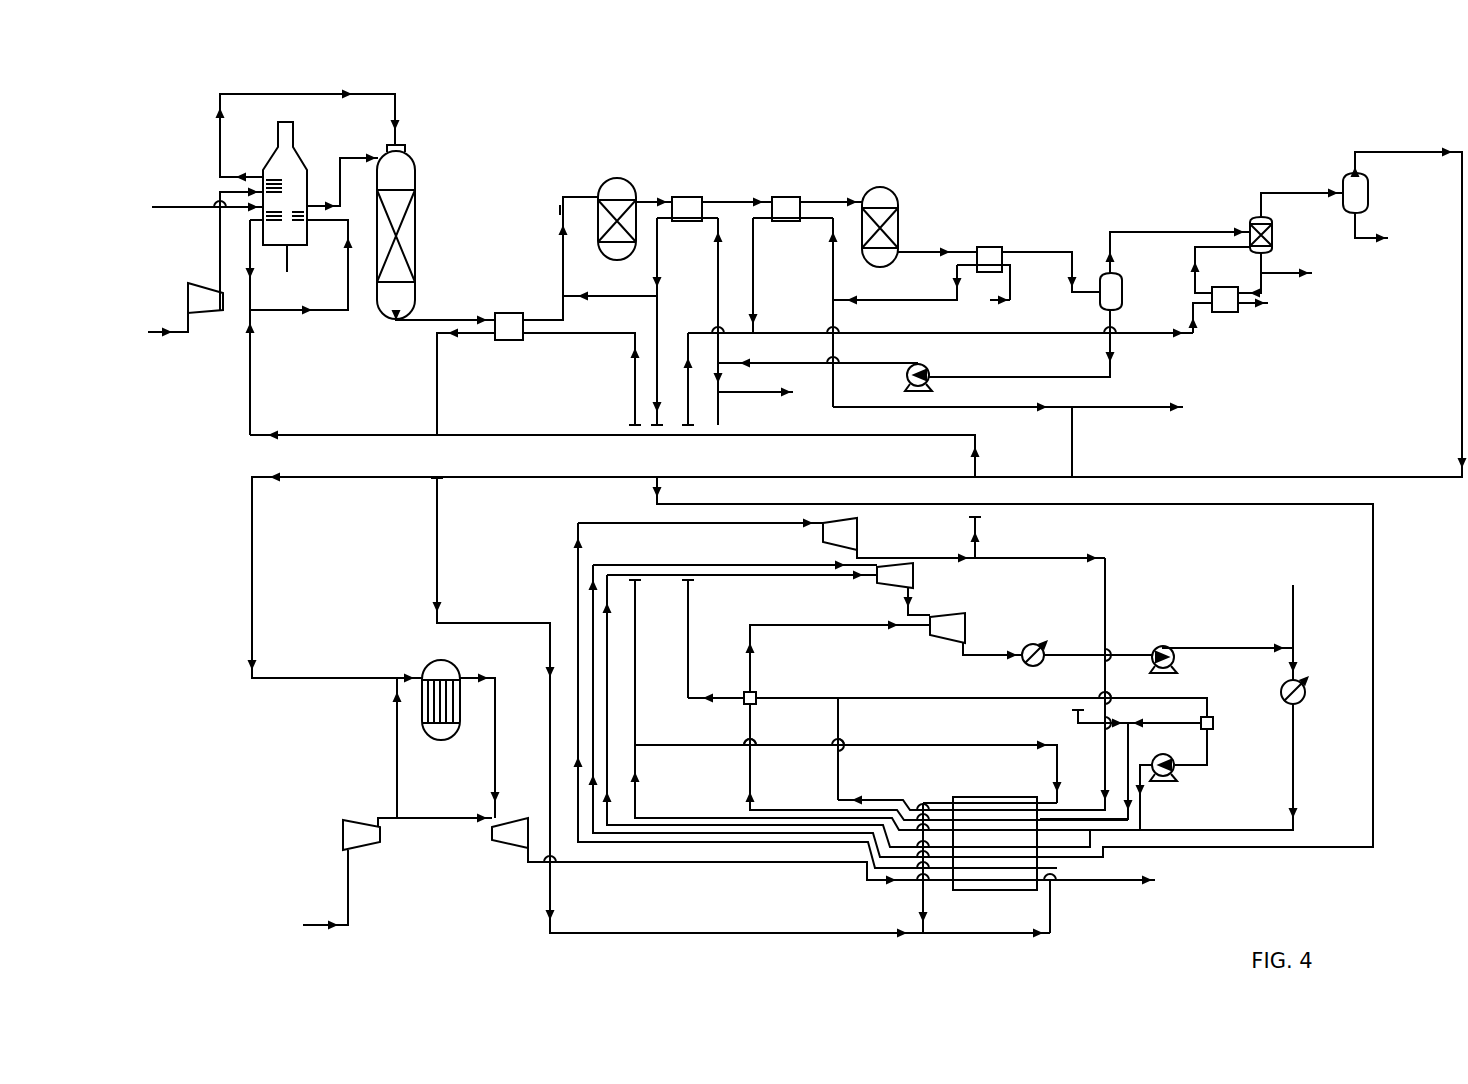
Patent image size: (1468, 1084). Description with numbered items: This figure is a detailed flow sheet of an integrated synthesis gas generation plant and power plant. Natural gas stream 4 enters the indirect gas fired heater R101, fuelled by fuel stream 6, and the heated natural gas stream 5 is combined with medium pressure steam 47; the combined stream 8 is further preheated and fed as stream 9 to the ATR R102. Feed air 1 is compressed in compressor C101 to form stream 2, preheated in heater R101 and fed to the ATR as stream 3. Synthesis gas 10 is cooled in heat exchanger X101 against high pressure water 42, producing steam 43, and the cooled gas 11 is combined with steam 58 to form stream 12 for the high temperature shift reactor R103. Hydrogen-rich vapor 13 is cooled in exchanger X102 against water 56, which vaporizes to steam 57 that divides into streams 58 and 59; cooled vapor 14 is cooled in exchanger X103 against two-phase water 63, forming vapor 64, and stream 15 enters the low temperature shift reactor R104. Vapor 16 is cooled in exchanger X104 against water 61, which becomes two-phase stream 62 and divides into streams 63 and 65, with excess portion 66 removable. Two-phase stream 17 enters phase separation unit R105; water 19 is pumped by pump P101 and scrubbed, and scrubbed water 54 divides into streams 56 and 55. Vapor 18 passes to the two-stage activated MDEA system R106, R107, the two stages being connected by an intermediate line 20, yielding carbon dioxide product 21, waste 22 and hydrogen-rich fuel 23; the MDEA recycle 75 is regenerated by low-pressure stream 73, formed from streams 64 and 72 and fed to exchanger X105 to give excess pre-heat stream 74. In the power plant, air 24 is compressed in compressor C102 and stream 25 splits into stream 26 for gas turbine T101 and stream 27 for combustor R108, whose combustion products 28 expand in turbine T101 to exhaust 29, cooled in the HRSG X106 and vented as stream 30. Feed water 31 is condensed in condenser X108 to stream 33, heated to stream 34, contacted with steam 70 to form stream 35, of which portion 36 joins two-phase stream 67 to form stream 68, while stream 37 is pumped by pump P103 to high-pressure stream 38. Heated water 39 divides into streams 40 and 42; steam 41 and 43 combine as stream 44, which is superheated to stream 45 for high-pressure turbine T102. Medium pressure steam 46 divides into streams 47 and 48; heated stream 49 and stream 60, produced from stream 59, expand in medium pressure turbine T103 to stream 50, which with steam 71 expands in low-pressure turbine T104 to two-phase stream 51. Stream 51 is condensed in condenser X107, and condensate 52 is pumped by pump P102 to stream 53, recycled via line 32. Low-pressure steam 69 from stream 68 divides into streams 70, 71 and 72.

The feed air stream 1 is at (155, 335).
The medium pressure feed air stream 2 is at (218, 250).
The preheated air stream 3 is at (332, 95).
The natural gas stream 4 is at (185, 205).
The heated natural gas stream 5 is at (252, 295).
The fuel stream 6 is at (285, 263).
The combined stream 8 is at (333, 312).
The ATR feed stream 9 is at (339, 159).
The synthesis gas stream 10 is at (412, 323).
The cooled gas stream 11 is at (545, 316).
The vapor stream 12 is at (561, 208).
The medium pressure hydrogen-rich vapor stream 13 is at (650, 199).
The cooled vapor stream 14 is at (732, 199).
The cooled synthesis gas stream 15 is at (827, 199).
The medium pressure hydrogen-rich vapor stream 16 is at (927, 250).
The medium pressure two-phase stream 17 is at (1059, 250).
The medium pressure vapor stream 18 is at (1182, 229).
The medium pressure water stream 19 is at (1032, 375).
The vapor line 20 is at (1302, 190).
The carbon dioxide product stream 21 is at (1293, 276).
The waste stream 22 is at (1366, 241).
The hydrogen-rich vapor 23 is at (796, 475).
The feed air stream 24 is at (346, 891).
The compressed feed air stream 25 is at (378, 816).
The air stream 26 is at (440, 820).
The combustor air stream 27 is at (395, 730).
The combustion products stream 28 is at (495, 730).
The exhaust stream 29 is at (710, 864).
The cooled exhaust stream 30 is at (1125, 884).
The feed water stream 31 is at (1296, 595).
The recycle line 32 is at (1296, 655).
The condensed water stream 33 is at (1296, 752).
The heated water stream 34 is at (882, 795).
The water stream 35 is at (862, 695).
The water portion 36 is at (1189, 708).
The pump feed stream 37 is at (1212, 745).
The high-pressure water stream 38 is at (1143, 808).
The heated water stream 39 is at (637, 793).
The water stream 40 is at (700, 747).
The steam stream 41 is at (920, 904).
The high pressure water stream 42 is at (637, 655).
The high-pressure steam stream 43 is at (492, 621).
The high-pressure steam stream 44 is at (985, 935).
The superheated steam stream 45 is at (621, 522).
The medium pressure steam stream 46 is at (919, 558).
The medium pressure steam stream 47 is at (545, 432).
The steam stream 48 is at (1024, 558).
The heated steam stream 49 is at (716, 563).
The low-pressure steam stream 50 is at (932, 617).
The two phase water stream 51 is at (989, 649).
The condensed stream 52 is at (1124, 653).
The low-pressure water stream 53 is at (1249, 644).
The scrubbed water stream 54 is at (798, 366).
The water stream 55 is at (752, 393).
The medium pressure pre-heated water stream 56 is at (715, 306).
The steam stream 57 is at (660, 270).
The medium pressure steam stream 58 is at (606, 296).
The medium pressure steam stream 59 is at (1120, 504).
The heated steam stream 60 is at (735, 576).
The low pressure water stream 61 is at (1012, 289).
The two-phase low pressure water stream 62 is at (924, 298).
The two-phase water stream 63 is at (835, 284).
The vapor stream 64 is at (756, 261).
The two-phase water stream 65 is at (1011, 410).
The excess pre-heat stream 66 is at (1144, 404).
The low pressure two-phase water stream 67 is at (1073, 443).
The combined two phase stream 68 is at (1095, 768).
The low-pressure steam stream 69 is at (789, 805).
The low pressure gaseous water stream 70 is at (789, 695).
The low-pressure steam stream 71 is at (789, 622).
The low-pressure steam stream 72 is at (690, 650).
The low-pressure stream 73 is at (788, 332).
The excess low pressure pre-heat stream 74 is at (1250, 306).
The recycle stream 75 is at (1228, 248).
The compressor C101 is at (174, 298).
The compressor C102 is at (374, 851).
The indirect gas fired heater R101 is at (304, 197).
The ATR R102 is at (425, 232).
The high temperature shift reactor R103 is at (617, 232).
The low temperature shift reactor R104 is at (912, 225).
The phase separation unit R105 is at (1136, 303).
The activated MDEA system first stage R106 is at (1291, 235).
The activated MDEA system second stage R107 is at (1384, 193).
The combustor R108 is at (437, 714).
The heat exchanger X101 is at (493, 313).
The heat exchanger X102 is at (688, 226).
The heat exchanger X103 is at (785, 223).
The heat exchanger X104 is at (988, 247).
The heat exchanger X105 is at (1221, 297).
The HRSG X106 is at (1025, 858).
The condenser X107 is at (1060, 664).
The condenser X108 is at (1319, 700).
The pump P101 is at (918, 365).
The pump P102 is at (1175, 645).
The pump P103 is at (1163, 755).
The gas turbine T101 is at (498, 850).
The high-pressure steam turbine T102 is at (810, 537).
The medium pressure steam turbine T103 is at (869, 585).
The low-pressure steam turbine T104 is at (929, 640).